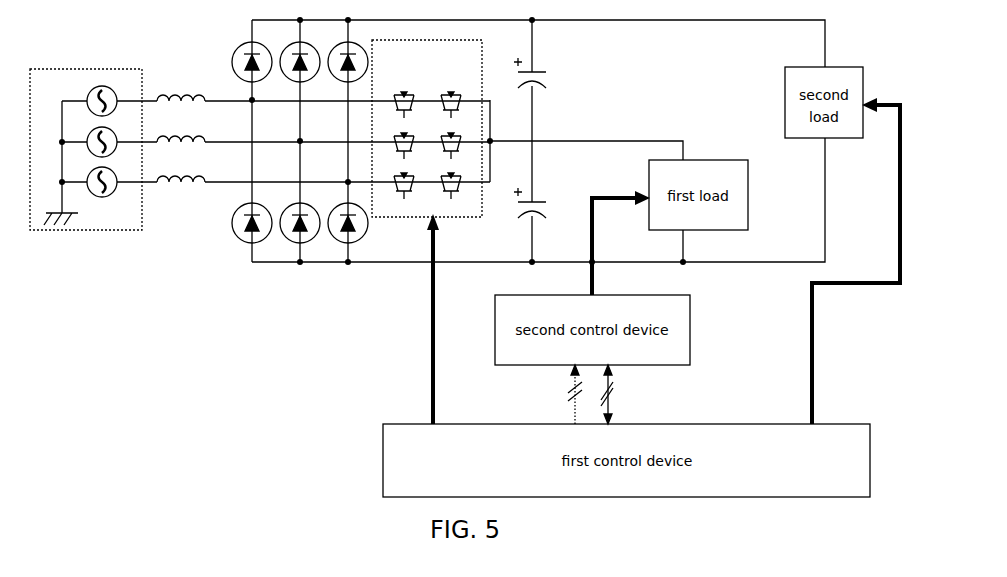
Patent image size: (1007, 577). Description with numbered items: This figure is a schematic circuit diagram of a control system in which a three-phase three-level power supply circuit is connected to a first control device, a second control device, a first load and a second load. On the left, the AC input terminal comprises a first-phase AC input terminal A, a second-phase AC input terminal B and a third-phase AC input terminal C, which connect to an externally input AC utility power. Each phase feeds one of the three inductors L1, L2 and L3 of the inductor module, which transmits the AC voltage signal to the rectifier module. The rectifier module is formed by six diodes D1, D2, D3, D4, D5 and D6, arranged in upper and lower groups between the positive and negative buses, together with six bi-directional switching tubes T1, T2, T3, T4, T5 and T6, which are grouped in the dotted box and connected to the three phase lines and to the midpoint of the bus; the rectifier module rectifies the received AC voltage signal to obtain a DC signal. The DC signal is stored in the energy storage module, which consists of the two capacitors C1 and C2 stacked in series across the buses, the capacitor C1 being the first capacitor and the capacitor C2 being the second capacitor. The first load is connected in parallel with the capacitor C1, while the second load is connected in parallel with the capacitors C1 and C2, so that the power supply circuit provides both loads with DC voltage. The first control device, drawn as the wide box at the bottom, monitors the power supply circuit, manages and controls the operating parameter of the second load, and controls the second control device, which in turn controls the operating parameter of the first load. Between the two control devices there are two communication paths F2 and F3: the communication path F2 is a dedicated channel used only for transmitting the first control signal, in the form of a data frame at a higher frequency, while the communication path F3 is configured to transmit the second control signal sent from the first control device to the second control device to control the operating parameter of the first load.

The first-phase AC input terminal A is at (91, 101).
The second-phase AC input terminal B is at (93, 142).
The third-phase AC input terminal C is at (93, 182).
The inductor L1 is at (190, 94).
The inductor L2 is at (190, 135).
The inductor L3 is at (190, 175).
The diode D1 is at (249, 56).
The diode D2 is at (249, 232).
The diode D3 is at (297, 56).
The diode D4 is at (297, 232).
The diode D5 is at (345, 56).
The diode D6 is at (345, 232).
The bi-directional switching tube T1 is at (394, 103).
The bi-directional switching tube T2 is at (458, 103).
The bi-directional switching tube T3 is at (394, 144).
The bi-directional switching tube T4 is at (458, 144).
The bi-directional switching tube T5 is at (394, 184).
The bi-directional switching tube T6 is at (458, 184).
The capacitor C1 is at (534, 71).
The capacitor C2 is at (534, 201).
The communication path F2 is at (584, 413).
The communication path F3 is at (610, 413).